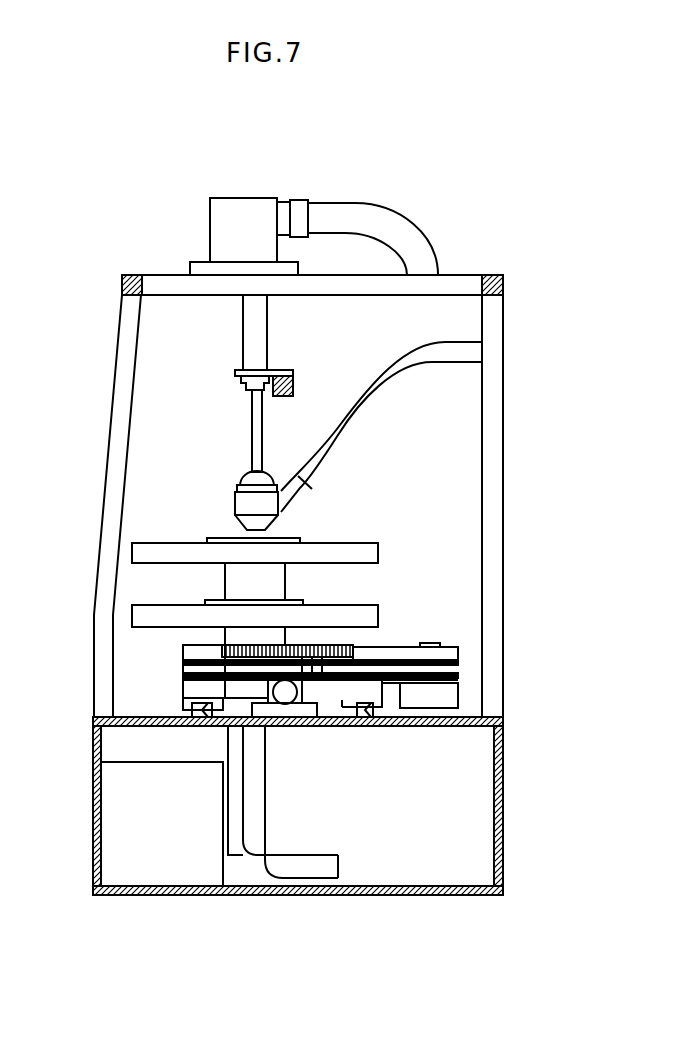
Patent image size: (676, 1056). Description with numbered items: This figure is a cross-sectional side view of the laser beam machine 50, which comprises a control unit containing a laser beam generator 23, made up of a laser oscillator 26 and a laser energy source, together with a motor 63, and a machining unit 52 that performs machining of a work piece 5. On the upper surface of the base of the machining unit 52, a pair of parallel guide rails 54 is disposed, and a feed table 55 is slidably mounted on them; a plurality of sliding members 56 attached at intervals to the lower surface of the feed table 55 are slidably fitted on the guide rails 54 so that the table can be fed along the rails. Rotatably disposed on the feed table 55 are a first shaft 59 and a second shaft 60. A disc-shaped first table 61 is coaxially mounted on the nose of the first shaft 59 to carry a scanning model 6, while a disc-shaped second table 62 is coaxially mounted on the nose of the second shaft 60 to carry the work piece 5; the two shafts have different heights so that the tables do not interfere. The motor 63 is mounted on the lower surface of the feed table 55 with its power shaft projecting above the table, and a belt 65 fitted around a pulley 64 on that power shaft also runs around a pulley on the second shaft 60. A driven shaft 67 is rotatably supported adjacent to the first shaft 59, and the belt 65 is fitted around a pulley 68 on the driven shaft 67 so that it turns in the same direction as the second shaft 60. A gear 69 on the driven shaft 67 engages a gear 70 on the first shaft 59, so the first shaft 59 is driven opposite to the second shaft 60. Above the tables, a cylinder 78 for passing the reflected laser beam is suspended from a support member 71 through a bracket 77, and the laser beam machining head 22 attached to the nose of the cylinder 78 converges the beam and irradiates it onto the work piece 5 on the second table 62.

The work piece 5 is at (213, 535).
The scanning model 6 is at (205, 600).
The laser beam machining head 22 is at (245, 503).
The laser beam generator 23 is at (214, 195).
The laser oscillator 26 is at (248, 207).
The laser beam machine 50 is at (484, 256).
The machining unit 52 is at (503, 435).
The guide rails 54 is at (200, 712).
The feed table 55 is at (233, 698).
The sliding members 56 is at (188, 707).
The first shaft 59 is at (233, 635).
The second shaft 60 is at (277, 577).
The first table 61 is at (138, 618).
The second table 62 is at (357, 548).
The motor 63 is at (447, 695).
The pulley 64 is at (458, 658).
The belt 65 is at (390, 665).
The driven shaft 67 is at (330, 643).
The pulley 68 is at (317, 665).
The gear 69 is at (306, 660).
The gear 70 is at (233, 660).
The support member 71 is at (282, 398).
The bracket 77 is at (253, 371).
The cylinder 78 is at (257, 328).